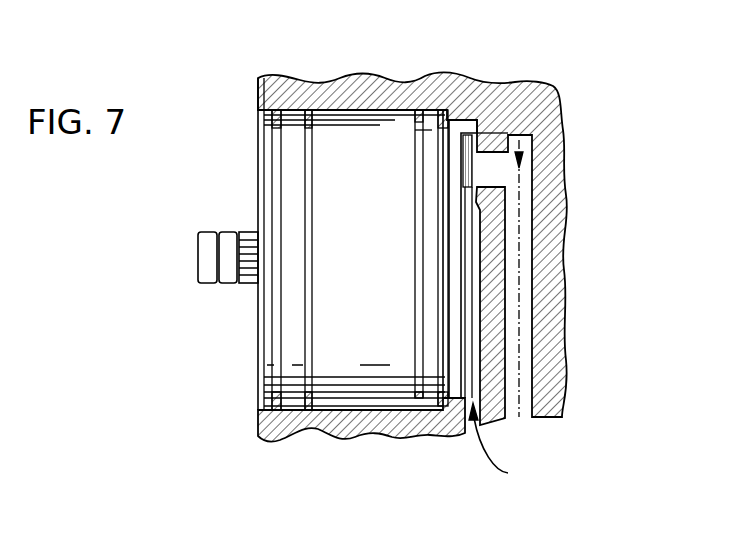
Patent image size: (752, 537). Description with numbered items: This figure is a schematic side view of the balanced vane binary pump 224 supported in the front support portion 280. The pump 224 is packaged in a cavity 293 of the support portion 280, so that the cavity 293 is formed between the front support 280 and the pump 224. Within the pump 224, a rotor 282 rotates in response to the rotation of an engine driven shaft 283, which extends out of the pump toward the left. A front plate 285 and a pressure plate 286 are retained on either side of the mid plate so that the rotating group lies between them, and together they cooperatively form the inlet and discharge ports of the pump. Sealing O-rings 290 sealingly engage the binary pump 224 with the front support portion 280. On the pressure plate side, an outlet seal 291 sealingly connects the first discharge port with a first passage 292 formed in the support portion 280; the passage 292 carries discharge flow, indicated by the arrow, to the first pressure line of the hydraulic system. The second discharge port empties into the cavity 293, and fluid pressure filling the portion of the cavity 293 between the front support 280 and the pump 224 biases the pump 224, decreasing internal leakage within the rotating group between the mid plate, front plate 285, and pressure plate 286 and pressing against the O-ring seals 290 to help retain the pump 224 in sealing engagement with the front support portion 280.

The front support portion 280 is at (565, 177).
The first passage 292 is at (545, 84).
The outlet seal 291 is at (521, 134).
The rotor 282 is at (333, 108).
The front plate 285 is at (260, 78).
The balanced vane binary pump 224 is at (262, 364).
The sealing O-rings 290 is at (280, 108).
The pressure plate 286 is at (423, 108).
The engine driven shaft 283 is at (246, 229).
The cavity 293 is at (511, 445).